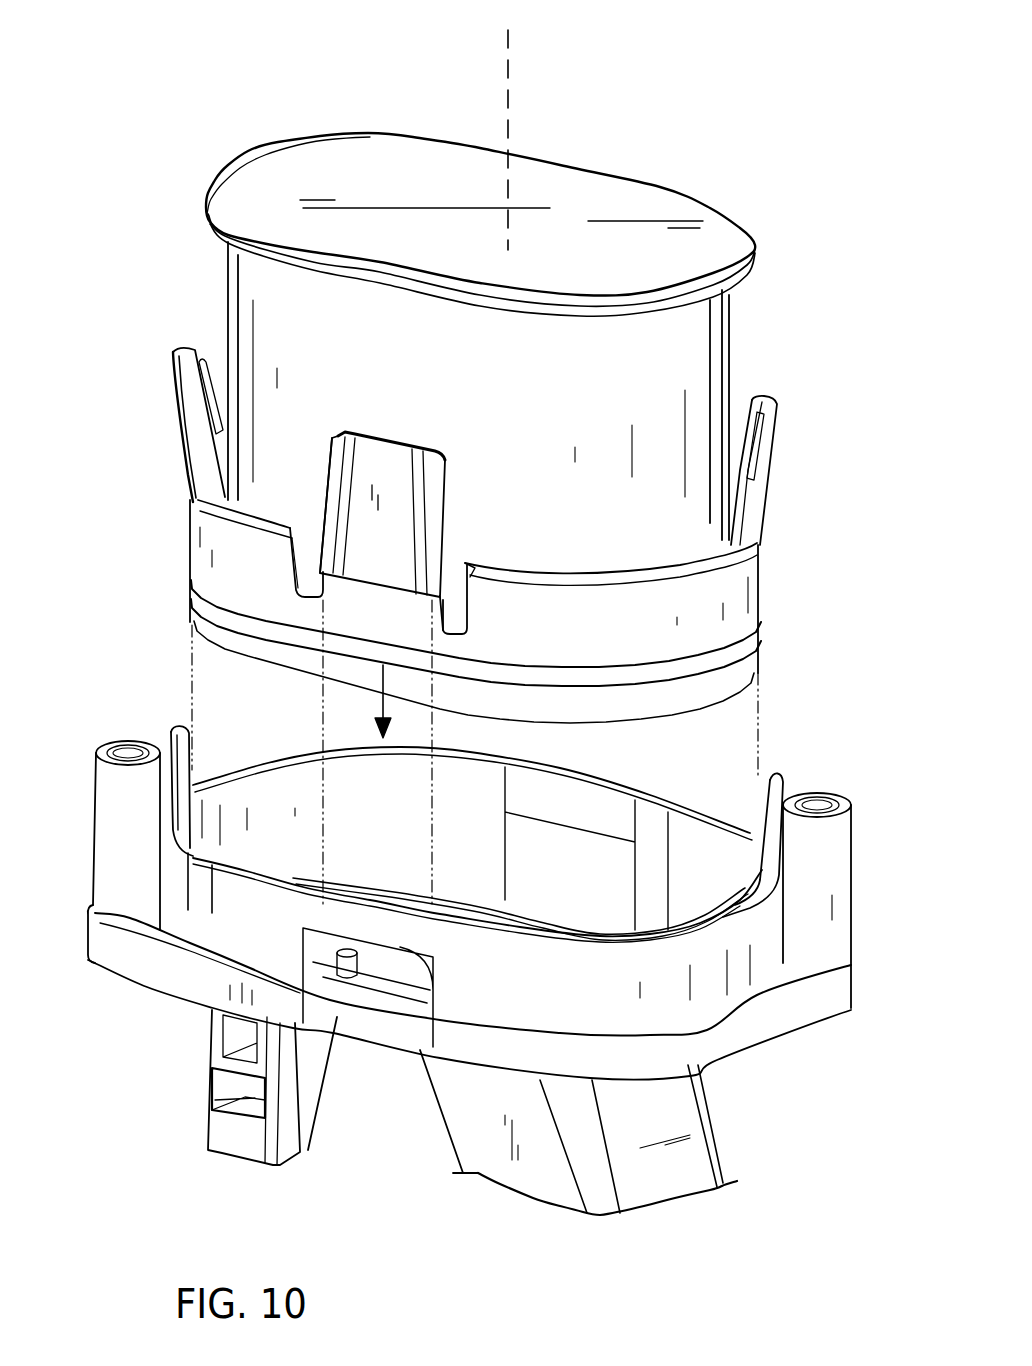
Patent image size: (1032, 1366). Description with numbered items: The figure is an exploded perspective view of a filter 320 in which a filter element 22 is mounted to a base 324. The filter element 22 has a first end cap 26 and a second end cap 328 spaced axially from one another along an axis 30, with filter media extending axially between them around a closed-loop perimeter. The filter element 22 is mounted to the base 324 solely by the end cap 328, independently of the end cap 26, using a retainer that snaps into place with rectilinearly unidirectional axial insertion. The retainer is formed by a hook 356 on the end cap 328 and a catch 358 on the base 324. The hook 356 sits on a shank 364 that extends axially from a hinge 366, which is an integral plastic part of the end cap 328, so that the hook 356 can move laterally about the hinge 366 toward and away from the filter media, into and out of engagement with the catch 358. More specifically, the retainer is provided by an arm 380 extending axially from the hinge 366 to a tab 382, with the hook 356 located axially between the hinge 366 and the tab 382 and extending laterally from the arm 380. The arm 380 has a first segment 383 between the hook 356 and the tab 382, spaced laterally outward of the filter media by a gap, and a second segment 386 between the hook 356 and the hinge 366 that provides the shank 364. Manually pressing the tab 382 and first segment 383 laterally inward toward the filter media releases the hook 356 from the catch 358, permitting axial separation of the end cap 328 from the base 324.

The axis 30 is at (510, 93).
The first end cap 26 is at (750, 248).
The filter element 22 is at (695, 332).
The filter 320 is at (194, 293).
The second end cap 328 is at (760, 556).
The arm 380 is at (393, 462).
The tab 382 is at (338, 436).
The first segment 383 is at (322, 520).
The second segment 386 is at (300, 586).
The hook 356 is at (445, 612).
The shank 364 is at (456, 600).
The hinge 366 is at (468, 617).
The catch 358 is at (440, 992).
The base 324 is at (717, 1127).